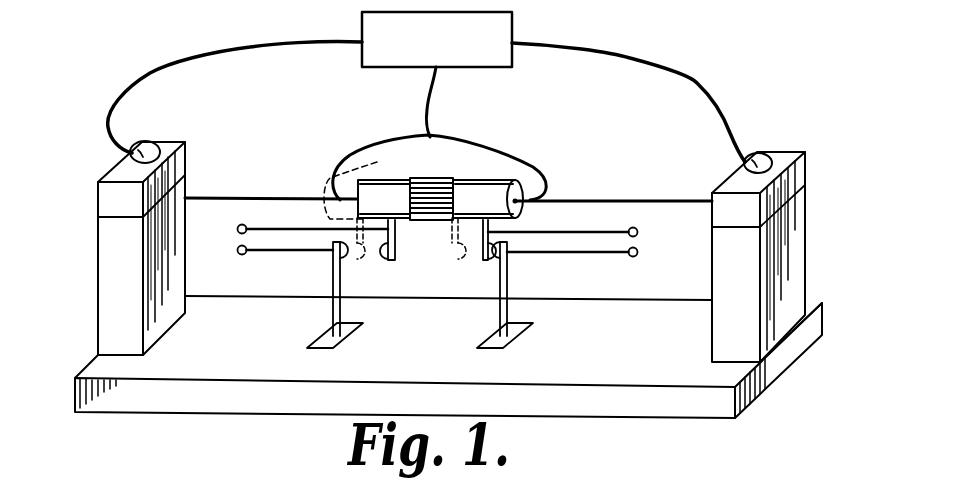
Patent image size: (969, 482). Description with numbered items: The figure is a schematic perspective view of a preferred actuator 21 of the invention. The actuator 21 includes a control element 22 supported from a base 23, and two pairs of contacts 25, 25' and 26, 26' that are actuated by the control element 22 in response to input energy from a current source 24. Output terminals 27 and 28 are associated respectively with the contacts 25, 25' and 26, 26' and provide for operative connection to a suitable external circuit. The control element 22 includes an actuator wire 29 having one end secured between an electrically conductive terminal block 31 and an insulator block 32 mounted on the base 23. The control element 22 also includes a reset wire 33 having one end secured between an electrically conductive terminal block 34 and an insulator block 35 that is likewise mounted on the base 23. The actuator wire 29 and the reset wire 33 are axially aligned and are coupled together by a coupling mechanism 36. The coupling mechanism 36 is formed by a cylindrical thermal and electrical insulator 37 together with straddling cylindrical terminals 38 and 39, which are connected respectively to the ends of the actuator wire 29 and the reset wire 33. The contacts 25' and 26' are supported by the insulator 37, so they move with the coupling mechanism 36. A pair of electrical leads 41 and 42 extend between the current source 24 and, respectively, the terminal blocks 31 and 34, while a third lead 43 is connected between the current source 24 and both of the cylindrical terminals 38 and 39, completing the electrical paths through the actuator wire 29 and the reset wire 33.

The actuator 21 is at (115, 56).
The control element 22 is at (523, 127).
The base 23 is at (805, 355).
The current source 24 is at (513, 28).
The contact 25 is at (326, 295).
The contact 26 is at (519, 295).
The contact 25' is at (384, 256).
The contact 26' is at (465, 257).
The output terminals 27 is at (237, 249).
The output terminals 28 is at (640, 251).
The actuator wire 29 is at (227, 197).
The terminal block 31 is at (170, 138).
The insulator block 32 is at (98, 273).
The reset wire 33 is at (620, 200).
The terminal block 34 is at (785, 150).
The insulator block 35 is at (805, 233).
The coupling mechanism 36 is at (405, 124).
The cylindrical thermal and electrical insulator 37 is at (450, 180).
The cylindrical terminal 38 is at (403, 180).
The cylindrical terminal 39 is at (502, 180).
The electrical lead 41 is at (247, 47).
The electrical lead 42 is at (697, 83).
The lead 43 is at (432, 102).